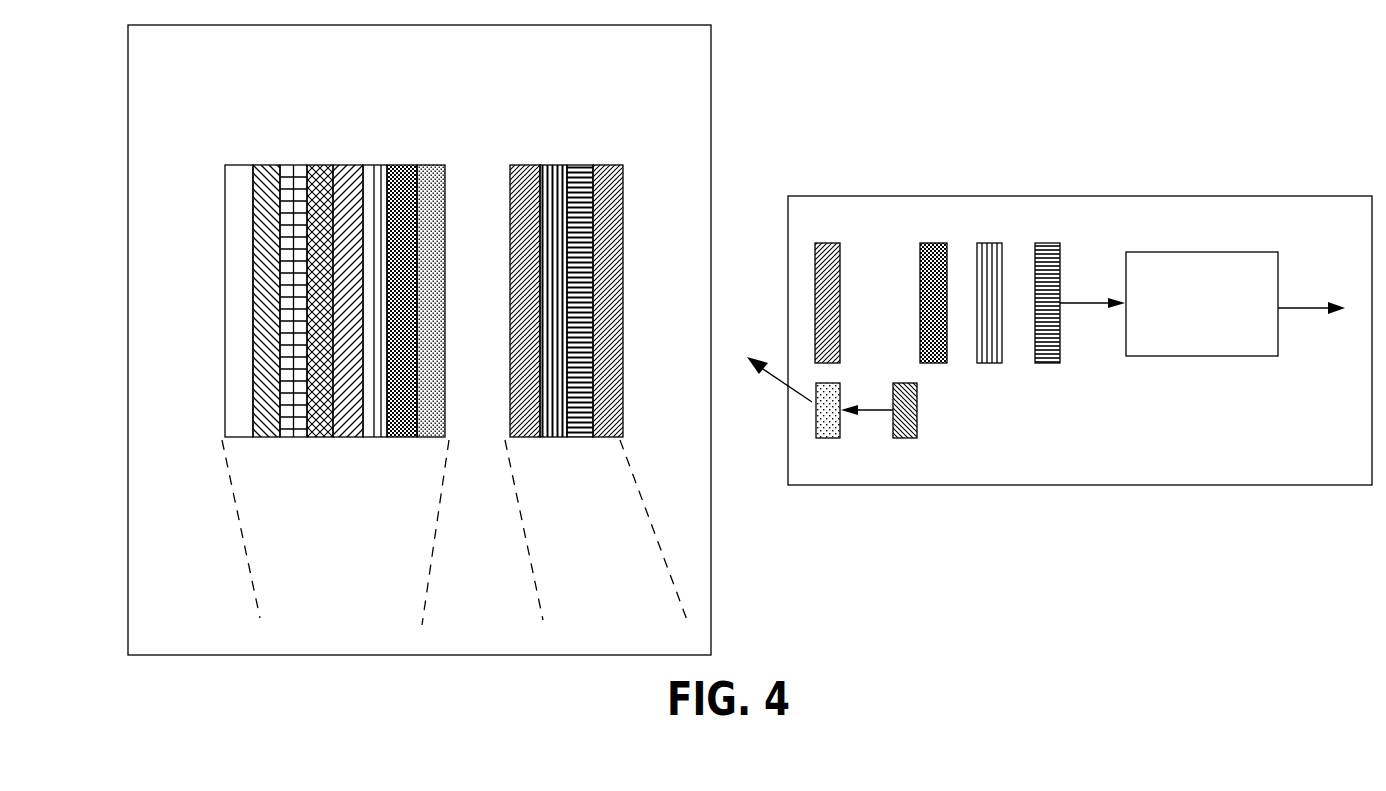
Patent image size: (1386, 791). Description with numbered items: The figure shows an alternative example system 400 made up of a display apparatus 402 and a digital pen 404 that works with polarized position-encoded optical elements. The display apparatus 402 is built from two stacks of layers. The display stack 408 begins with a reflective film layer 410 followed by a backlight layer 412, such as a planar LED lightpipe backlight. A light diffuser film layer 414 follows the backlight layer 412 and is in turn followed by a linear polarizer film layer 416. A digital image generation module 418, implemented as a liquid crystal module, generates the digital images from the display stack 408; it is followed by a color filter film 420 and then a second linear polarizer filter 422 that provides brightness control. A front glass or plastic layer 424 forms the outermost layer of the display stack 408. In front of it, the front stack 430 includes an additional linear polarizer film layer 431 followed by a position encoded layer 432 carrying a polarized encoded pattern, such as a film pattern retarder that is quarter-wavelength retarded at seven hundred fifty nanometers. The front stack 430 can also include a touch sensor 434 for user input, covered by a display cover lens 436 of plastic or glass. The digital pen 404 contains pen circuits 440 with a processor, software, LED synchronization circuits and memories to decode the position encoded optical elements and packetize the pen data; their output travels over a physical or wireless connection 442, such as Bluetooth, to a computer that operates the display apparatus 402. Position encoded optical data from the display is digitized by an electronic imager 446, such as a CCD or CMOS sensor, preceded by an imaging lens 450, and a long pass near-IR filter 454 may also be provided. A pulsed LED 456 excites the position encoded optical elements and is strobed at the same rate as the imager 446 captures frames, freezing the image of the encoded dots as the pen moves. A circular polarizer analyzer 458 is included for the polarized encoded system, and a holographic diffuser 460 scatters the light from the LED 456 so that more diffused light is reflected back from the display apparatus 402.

The system 400 is at (1050, 78).
The display apparatus 402 is at (711, 83).
The digital pen 404 is at (1175, 196).
The display stack 408 is at (360, 356).
The reflective film layer 410 is at (240, 437).
The backlight layer 412 is at (265, 437).
The light diffuser film layer 414 is at (296, 165).
The linear polarizer film layer 416 is at (318, 165).
The digital image generation module 418 is at (347, 437).
The color filter film 420 is at (375, 437).
The second linear polarizer filter 422 is at (402, 165).
The front glass layer 424 is at (432, 165).
The front stack 430 is at (596, 353).
The additional linear polarizer film layer 431 is at (520, 165).
The position encoded layer 432 is at (557, 437).
The touch sensor 434 is at (578, 165).
The display cover lens 436 is at (608, 165).
The pen circuits 440 is at (1200, 252).
The connection 442 is at (1290, 308).
The electronic imager 446 is at (1048, 363).
The imaging lens 450 is at (988, 363).
The long pass near-IR filter 454 is at (932, 243).
The pulsed LED 456 is at (917, 425).
The circular polarizer analyzer 458 is at (825, 243).
The holographic diffuser 460 is at (822, 438).